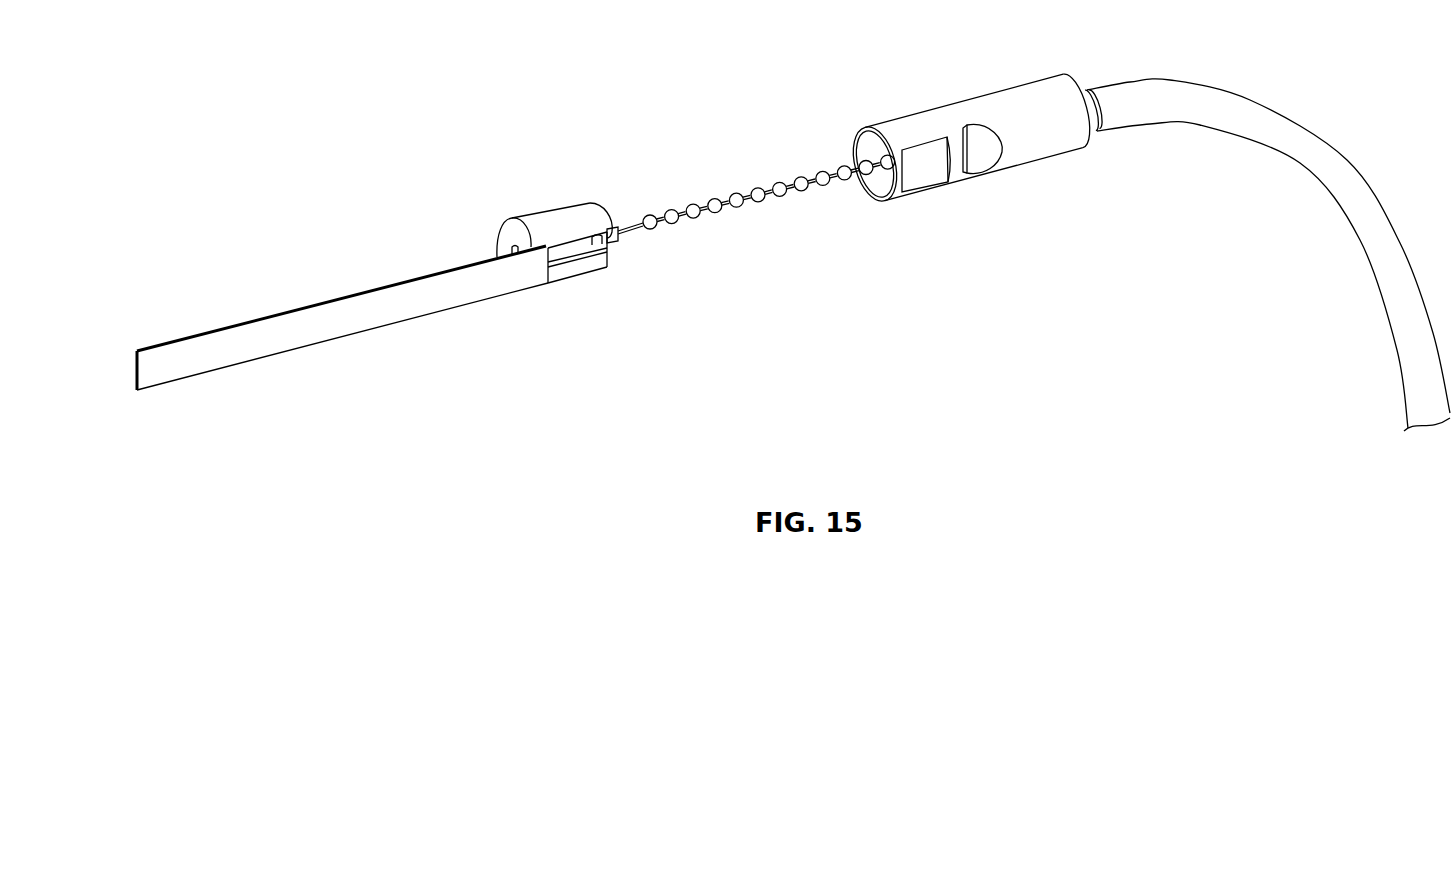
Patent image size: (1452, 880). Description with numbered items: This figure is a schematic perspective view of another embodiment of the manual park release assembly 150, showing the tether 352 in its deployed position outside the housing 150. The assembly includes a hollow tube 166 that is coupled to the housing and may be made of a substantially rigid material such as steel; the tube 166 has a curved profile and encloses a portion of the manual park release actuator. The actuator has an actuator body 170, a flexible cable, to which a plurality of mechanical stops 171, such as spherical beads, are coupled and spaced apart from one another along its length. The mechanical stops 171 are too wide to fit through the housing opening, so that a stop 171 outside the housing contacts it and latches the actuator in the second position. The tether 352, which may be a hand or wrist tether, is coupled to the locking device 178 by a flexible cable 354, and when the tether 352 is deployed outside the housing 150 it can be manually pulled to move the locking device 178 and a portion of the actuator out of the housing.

The manual park release assembly 150 is at (1033, 80).
The tube 166 is at (1183, 82).
The actuator body 170 is at (833, 178).
The mechanical stop 171 is at (700, 213).
The locking device 178 is at (548, 214).
The tether 352 is at (293, 311).
The flexible cable 354 is at (604, 269).